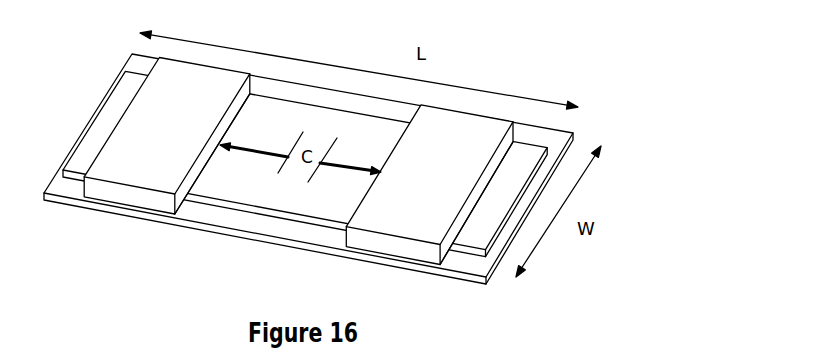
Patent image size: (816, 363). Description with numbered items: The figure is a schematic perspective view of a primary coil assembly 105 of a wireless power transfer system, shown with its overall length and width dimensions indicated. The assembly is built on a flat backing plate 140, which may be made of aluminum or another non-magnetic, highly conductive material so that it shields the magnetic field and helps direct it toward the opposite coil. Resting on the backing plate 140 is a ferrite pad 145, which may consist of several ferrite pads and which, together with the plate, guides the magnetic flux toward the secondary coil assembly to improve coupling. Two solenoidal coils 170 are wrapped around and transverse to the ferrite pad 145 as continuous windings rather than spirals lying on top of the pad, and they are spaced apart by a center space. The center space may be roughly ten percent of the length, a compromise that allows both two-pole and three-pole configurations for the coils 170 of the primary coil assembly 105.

The primary coil assembly 105 is at (681, 120).
The backing plate 140 is at (293, 228).
The ferrite pad 145 is at (278, 130).
The solenoidal coils 170 is at (187, 136).